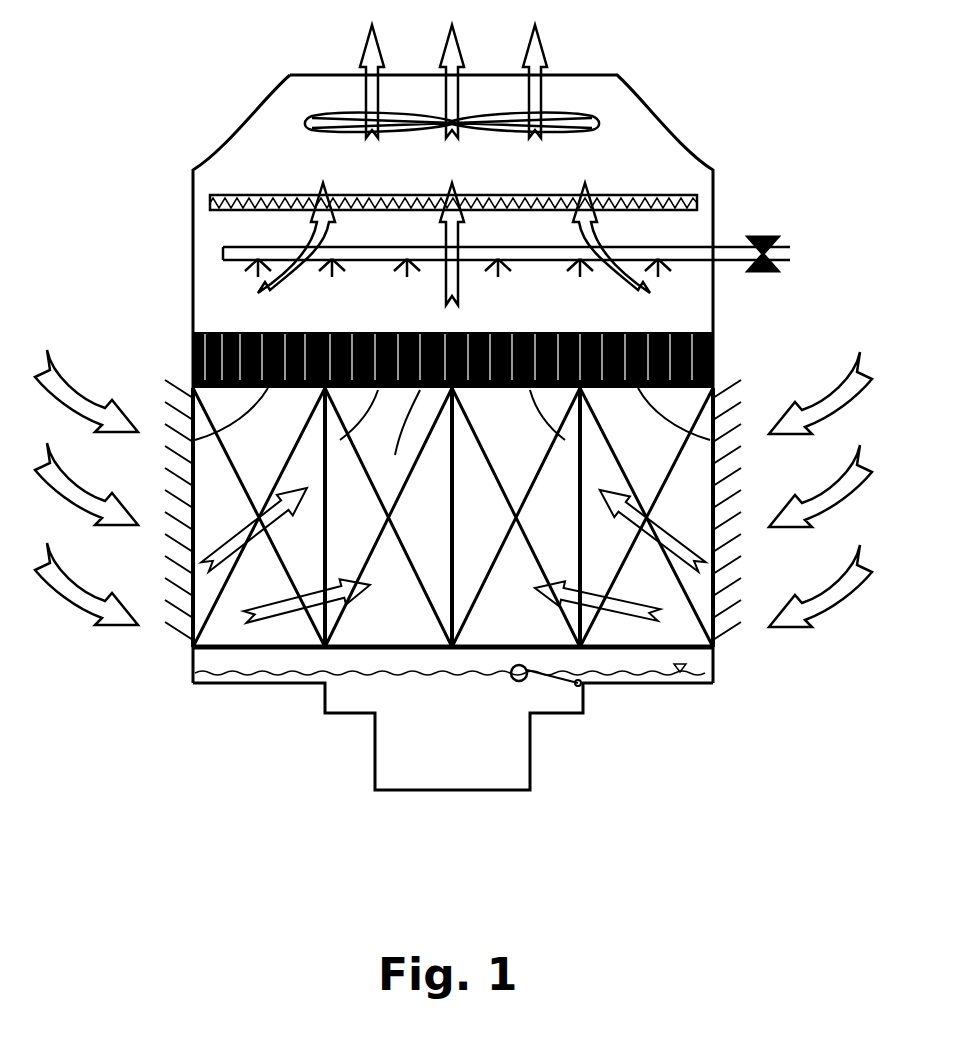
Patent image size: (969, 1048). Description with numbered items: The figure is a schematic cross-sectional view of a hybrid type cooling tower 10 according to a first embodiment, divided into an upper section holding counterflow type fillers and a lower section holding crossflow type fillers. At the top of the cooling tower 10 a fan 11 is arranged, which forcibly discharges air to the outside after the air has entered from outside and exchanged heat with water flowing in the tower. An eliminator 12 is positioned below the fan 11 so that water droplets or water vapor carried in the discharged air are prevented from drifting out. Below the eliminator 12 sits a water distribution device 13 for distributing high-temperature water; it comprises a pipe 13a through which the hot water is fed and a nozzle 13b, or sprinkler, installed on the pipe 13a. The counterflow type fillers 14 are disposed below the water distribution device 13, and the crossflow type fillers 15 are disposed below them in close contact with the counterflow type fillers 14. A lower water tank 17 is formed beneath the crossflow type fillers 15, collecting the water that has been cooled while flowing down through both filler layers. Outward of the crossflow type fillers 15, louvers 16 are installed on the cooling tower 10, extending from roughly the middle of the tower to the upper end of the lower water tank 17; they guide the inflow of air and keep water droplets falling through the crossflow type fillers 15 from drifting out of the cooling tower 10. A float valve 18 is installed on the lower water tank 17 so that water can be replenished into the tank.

The cooling tower 10 is at (205, 108).
The fan 11 is at (597, 113).
The eliminator 12 is at (697, 182).
The water distribution device 13 is at (712, 250).
The pipe 13a is at (240, 247).
The nozzle 13b is at (250, 262).
The counterflow type fillers 14 is at (715, 350).
The crossflow type fillers 15 is at (712, 473).
The louvers 16 is at (725, 635).
The lower water tank 17 is at (712, 683).
The float valve 18 is at (527, 677).